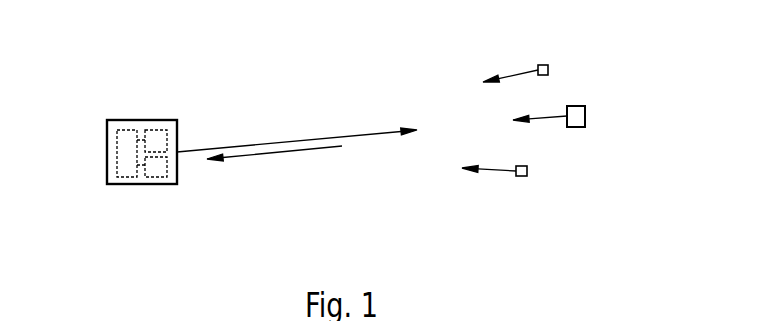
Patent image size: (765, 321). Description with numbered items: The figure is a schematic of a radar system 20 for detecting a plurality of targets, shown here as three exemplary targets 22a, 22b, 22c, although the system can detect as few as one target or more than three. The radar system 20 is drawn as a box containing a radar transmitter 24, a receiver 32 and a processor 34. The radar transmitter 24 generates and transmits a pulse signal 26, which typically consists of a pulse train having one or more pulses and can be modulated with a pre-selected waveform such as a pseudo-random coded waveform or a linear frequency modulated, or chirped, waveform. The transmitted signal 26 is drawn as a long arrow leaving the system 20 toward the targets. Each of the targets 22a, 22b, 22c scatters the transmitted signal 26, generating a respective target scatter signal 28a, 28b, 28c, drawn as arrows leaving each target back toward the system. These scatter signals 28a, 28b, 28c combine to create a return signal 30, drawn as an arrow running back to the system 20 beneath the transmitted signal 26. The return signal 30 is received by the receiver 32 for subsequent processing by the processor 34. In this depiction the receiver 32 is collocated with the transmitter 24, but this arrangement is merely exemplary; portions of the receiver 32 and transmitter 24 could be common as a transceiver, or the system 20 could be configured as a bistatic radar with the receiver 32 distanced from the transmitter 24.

The radar system 20 is at (112, 120).
The radar transmitter 24 is at (157, 135).
The receiver 32 is at (157, 165).
The processor 34 is at (127, 153).
The pulse signal 26 is at (363, 133).
The return signal 30 is at (273, 153).
The target 22a is at (578, 106).
The target 22b is at (545, 65).
The target 22c is at (523, 176).
The target scatter signal 28a is at (547, 120).
The target scatter signal 28b is at (518, 72).
The target scatter signal 28c is at (498, 172).